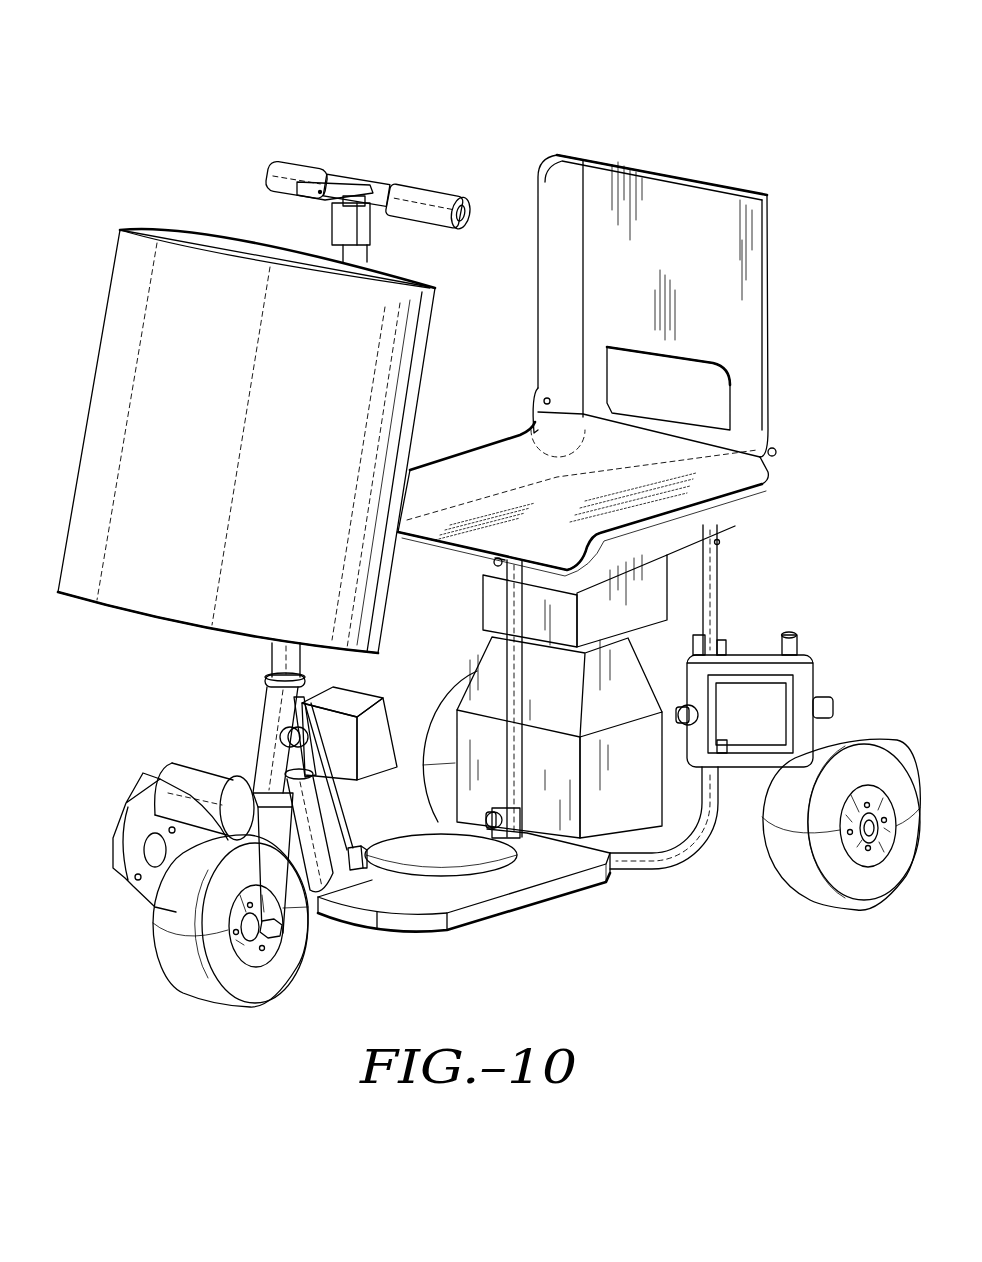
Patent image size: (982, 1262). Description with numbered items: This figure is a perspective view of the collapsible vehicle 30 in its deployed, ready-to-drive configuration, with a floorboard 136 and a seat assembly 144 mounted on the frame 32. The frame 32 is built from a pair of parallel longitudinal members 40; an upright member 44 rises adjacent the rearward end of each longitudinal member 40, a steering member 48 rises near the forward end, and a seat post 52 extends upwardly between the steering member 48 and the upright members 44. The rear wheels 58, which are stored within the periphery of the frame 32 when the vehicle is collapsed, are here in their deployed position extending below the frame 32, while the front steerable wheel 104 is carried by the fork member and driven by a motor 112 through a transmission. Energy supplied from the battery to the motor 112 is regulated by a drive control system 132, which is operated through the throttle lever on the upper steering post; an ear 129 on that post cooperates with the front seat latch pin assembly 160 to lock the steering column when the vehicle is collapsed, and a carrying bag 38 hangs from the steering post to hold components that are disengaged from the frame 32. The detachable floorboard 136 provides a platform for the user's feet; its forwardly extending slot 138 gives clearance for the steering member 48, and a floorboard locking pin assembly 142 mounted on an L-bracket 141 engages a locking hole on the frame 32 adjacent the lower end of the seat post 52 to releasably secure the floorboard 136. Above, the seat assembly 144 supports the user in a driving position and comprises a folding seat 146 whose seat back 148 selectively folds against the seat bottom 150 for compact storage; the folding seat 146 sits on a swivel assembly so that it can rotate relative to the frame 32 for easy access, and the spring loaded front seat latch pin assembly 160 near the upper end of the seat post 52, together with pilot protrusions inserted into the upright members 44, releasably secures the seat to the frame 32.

The collapsible vehicle 30 is at (188, 140).
The frame 32 is at (717, 840).
The carrying bag 38 is at (322, 447).
The longitudinal members 40 is at (491, 903).
The upright member 44 is at (713, 590).
The steering member 48 is at (340, 817).
The seat post 52 is at (516, 692).
The rear wheels 58 is at (456, 751).
The front steerable wheel 104 is at (196, 924).
The motor 112 is at (206, 809).
The ear 129 is at (350, 190).
The drive control system 132 is at (350, 690).
The floorboard 136 is at (443, 908).
The forwardly extending slot 138 is at (364, 880).
The L-bracket 141 is at (520, 836).
The floorboard locking pin assembly 142 is at (488, 815).
The seat assembly 144 is at (710, 306).
The folding seat 146 is at (642, 375).
The seat back 148 is at (692, 246).
The seat bottom 150 is at (561, 539).
The front seat latch pin assembly 160 is at (494, 565).